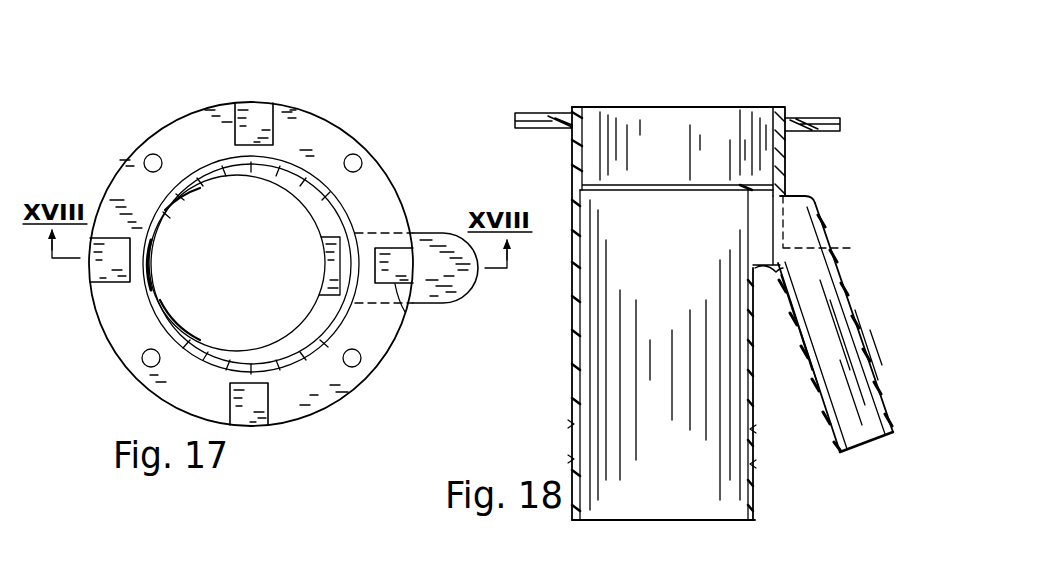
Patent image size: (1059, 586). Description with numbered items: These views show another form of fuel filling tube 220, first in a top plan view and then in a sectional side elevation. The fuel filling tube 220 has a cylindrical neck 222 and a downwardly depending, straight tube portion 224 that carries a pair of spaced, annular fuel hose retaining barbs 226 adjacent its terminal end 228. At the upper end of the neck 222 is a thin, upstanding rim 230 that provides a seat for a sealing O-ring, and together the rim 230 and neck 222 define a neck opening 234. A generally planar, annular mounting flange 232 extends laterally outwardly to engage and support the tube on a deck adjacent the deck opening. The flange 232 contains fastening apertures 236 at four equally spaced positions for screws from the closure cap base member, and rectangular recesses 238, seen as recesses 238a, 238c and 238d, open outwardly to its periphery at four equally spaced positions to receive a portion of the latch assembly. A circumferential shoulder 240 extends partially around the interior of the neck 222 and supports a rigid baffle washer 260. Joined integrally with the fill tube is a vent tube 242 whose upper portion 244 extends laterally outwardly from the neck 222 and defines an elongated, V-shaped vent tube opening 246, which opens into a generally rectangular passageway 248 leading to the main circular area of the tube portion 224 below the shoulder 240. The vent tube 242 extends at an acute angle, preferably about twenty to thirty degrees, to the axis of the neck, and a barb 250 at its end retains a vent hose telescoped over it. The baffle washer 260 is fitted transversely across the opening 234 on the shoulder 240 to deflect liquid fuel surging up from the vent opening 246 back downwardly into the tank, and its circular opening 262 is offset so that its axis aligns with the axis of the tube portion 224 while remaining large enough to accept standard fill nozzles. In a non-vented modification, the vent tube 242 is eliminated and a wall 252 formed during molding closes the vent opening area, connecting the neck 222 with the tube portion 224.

In FIG. 17, the fuel filling tube 220 is at (172, 100).
In FIG. 18, the fuel filling tube 220 is at (763, 82).
In FIG. 18, the cylindrical neck 222 is at (571, 160).
In FIG. 18, the tube portion 224 is at (571, 376).
In FIG. 18, the fuel hose retaining barbs 226 is at (757, 430).
In FIG. 18, the terminal end 228 is at (742, 521).
In FIG. 17, the rim 230 is at (308, 178).
In FIG. 18, the rim 230 is at (573, 107).
In FIG. 17, the mounting flange 232 is at (266, 104).
In FIG. 18, the mounting flange 232 is at (795, 119).
In FIG. 17, the neck opening 234 is at (190, 218).
In FIG. 17, the fastening apertures 236 is at (150, 156).
In FIG. 18, the rectangular recesses 238 is at (661, 128).
In FIG. 17, the rectangular recess 238a is at (92, 279).
In FIG. 17, the rectangular recess 238c is at (408, 306).
In FIG. 17, the rectangular recess 238d is at (263, 421).
In FIG. 17, the circumferential shoulder 240 is at (296, 191).
In FIG. 18, the circumferential shoulder 240 is at (760, 172).
In FIG. 17, the vent tube 242 is at (458, 291).
In FIG. 18, the vent tube 242 is at (853, 324).
In FIG. 18, the upper portion of vent tube 244 is at (801, 223).
In FIG. 18, the vent tube opening 246 is at (779, 216).
In FIG. 17, the rectangular passageway 248 is at (327, 240).
In FIG. 18, the rectangular passageway 248 is at (758, 239).
In FIG. 18, the barb 250 is at (896, 436).
In FIG. 18, the wall 252 is at (840, 229).
In FIG. 18, the baffle washer 260 is at (643, 193).
In FIG. 18, the circular opening 262 is at (748, 187).